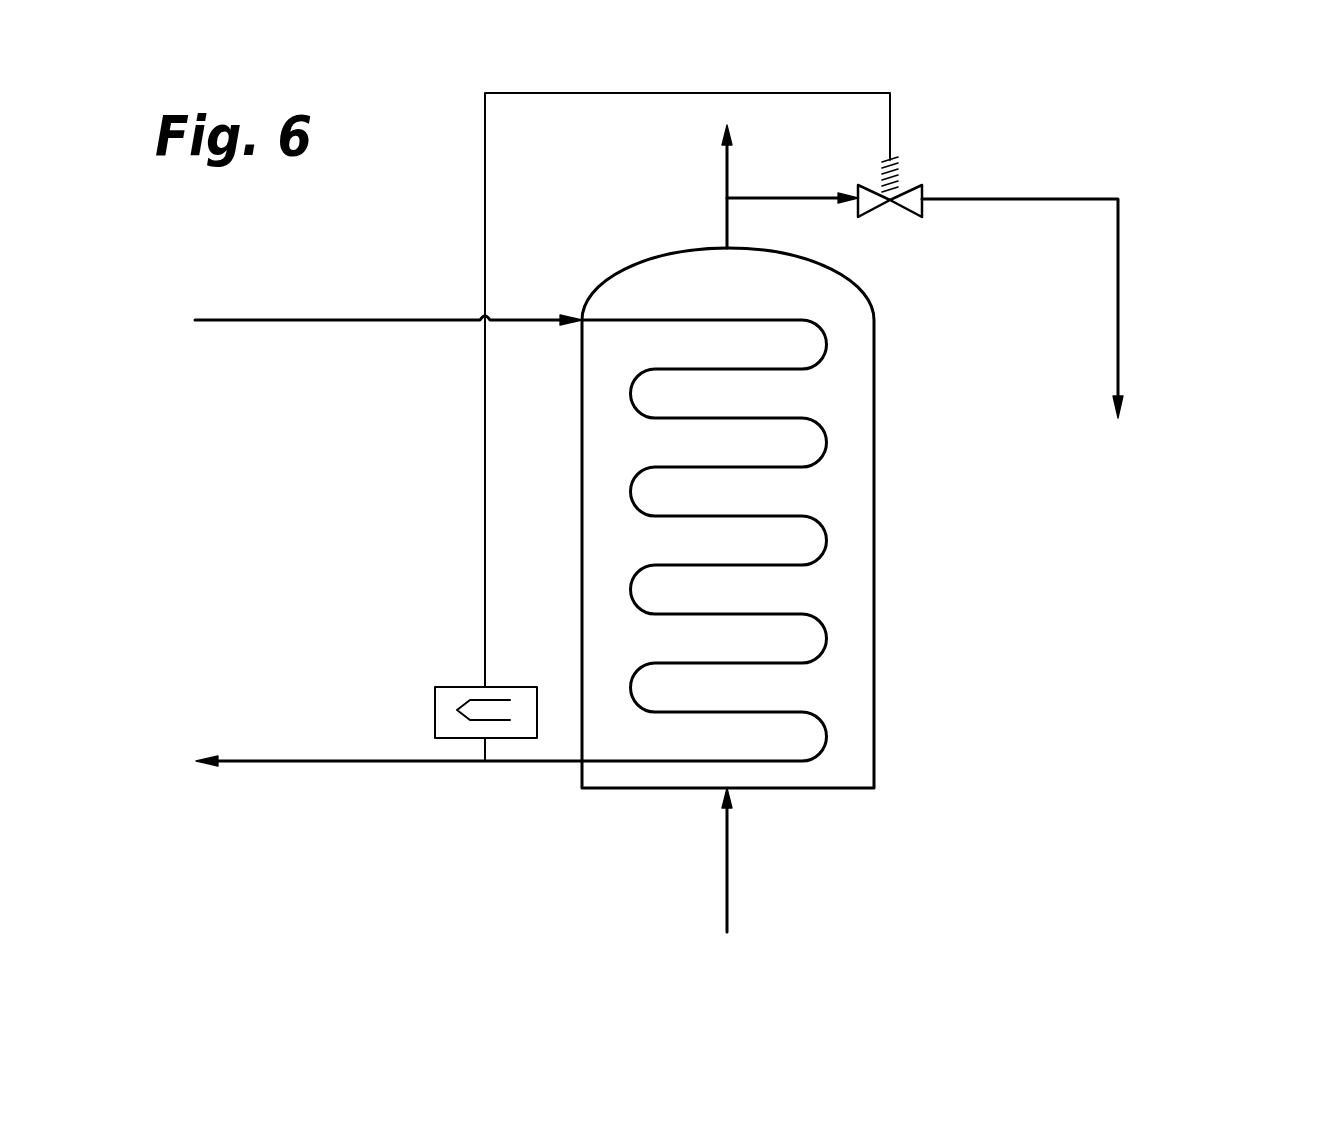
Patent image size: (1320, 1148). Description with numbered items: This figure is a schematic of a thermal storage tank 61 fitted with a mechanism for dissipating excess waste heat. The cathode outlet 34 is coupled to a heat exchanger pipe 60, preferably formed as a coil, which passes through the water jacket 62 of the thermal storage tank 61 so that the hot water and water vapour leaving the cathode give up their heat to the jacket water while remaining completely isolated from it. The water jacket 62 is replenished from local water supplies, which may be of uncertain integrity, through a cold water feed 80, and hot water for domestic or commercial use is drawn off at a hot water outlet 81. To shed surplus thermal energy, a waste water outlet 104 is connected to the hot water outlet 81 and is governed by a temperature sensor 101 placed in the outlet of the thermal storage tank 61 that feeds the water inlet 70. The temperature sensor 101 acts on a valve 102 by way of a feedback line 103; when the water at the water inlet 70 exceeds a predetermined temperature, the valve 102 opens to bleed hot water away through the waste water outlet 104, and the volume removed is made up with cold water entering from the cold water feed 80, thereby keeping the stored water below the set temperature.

The cathode outlet 34 is at (213, 318).
The heat exchanger pipe 60 is at (785, 418).
The thermal storage tank 61 is at (874, 427).
The water jacket 62 is at (762, 518).
The water inlet 70 is at (225, 765).
The cold water feed 80 is at (727, 895).
The hot water outlet 81 is at (723, 152).
The temperature sensor 101 is at (514, 686).
The valve 102 is at (891, 206).
The feedback line 103 is at (485, 405).
The waste water outlet 104 is at (1118, 342).